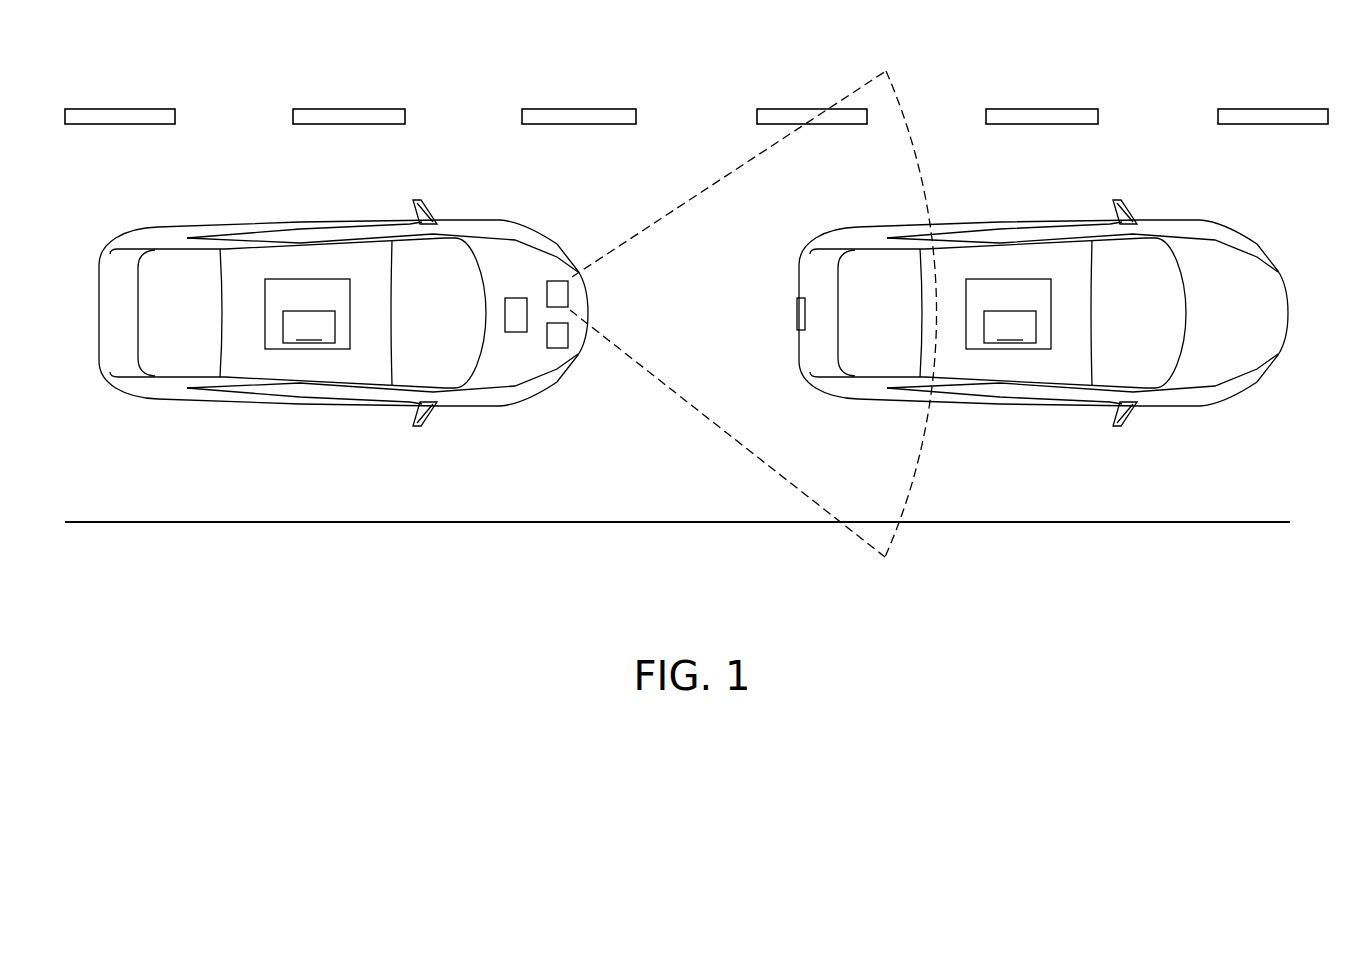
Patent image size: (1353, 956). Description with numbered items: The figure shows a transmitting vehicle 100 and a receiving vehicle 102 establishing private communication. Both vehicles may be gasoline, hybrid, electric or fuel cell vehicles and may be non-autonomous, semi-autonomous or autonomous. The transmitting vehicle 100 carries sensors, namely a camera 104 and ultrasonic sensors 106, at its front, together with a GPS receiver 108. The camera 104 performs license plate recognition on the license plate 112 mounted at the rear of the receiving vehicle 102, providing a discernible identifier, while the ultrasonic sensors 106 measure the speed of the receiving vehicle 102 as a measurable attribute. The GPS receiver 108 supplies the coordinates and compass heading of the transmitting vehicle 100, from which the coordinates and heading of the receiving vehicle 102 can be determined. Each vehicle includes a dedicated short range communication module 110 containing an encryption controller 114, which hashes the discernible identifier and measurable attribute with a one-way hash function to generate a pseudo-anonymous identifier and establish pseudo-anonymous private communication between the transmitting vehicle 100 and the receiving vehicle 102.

The transmitting vehicle 100 is at (535, 226).
The receiving vehicle 102 is at (1235, 226).
The camera 104 is at (557, 348).
The ultrasonic sensors 106 is at (568, 293).
The GPS receiver 108 is at (517, 332).
The dedicated short range communication (DSRC) module 110 is at (308, 279).
The license plate 112 is at (797, 313).
The encryption controller 114 is at (659, 327).